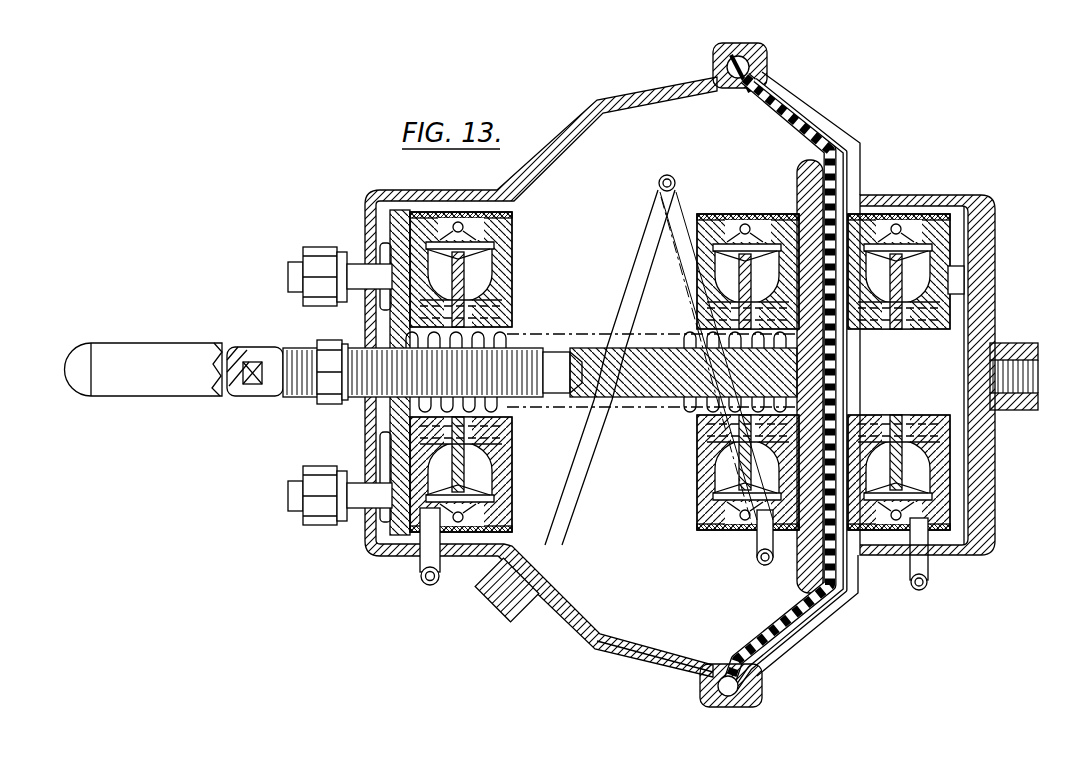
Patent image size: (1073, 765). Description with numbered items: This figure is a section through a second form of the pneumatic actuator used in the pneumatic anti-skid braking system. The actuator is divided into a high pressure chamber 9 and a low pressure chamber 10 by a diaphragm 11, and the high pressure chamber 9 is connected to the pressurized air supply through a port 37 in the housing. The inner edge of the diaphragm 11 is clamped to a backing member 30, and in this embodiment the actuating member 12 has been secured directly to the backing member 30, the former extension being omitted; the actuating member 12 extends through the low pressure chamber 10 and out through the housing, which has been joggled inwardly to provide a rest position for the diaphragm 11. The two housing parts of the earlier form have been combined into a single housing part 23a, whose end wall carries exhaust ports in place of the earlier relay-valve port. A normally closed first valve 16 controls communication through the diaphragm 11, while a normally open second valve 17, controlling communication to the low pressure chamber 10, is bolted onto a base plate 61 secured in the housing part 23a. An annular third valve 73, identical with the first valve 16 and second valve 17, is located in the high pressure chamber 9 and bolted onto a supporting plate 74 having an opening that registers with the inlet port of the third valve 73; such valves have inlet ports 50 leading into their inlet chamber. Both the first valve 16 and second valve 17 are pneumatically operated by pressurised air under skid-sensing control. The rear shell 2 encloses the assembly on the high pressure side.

The rear shell 2 is at (770, 643).
The high pressure chamber 9 is at (973, 263).
The low pressure chamber 10 is at (650, 558).
The diaphragm 11 is at (798, 128).
The actuating member 12 is at (275, 393).
The first valve 16 is at (726, 198).
The second valve 17 is at (530, 238).
The housing part 23a is at (627, 653).
The backing member 30 is at (806, 172).
The port 37 is at (1010, 353).
The inlet ports 50 is at (958, 287).
The base plate 61 is at (375, 234).
The third valve 73 is at (926, 218).
The supporting plate 74 is at (973, 230).